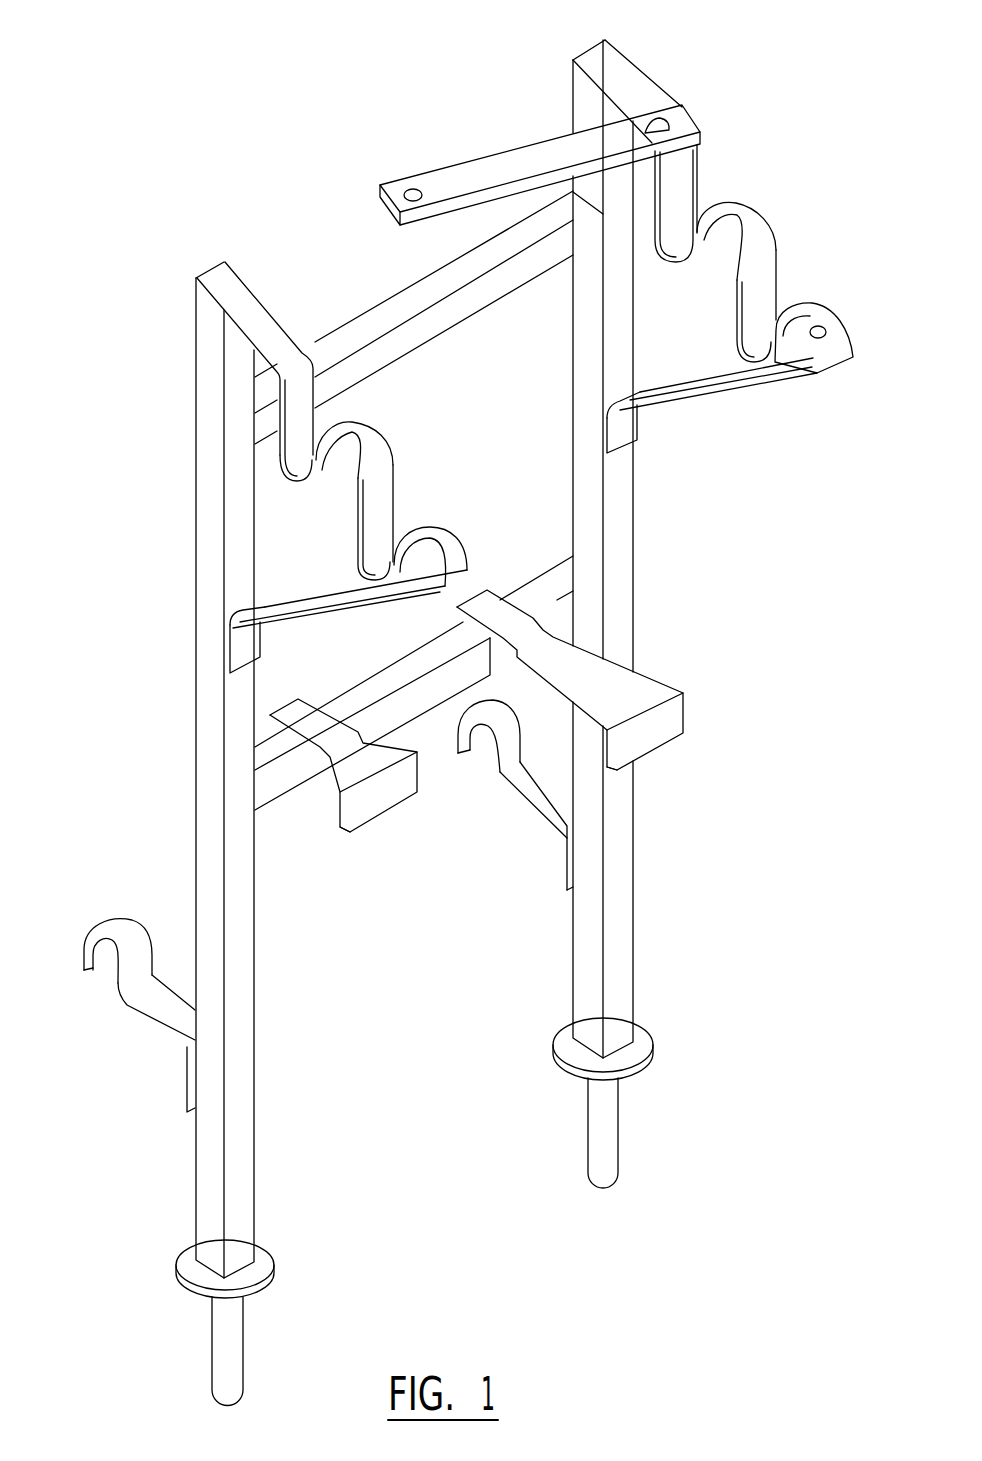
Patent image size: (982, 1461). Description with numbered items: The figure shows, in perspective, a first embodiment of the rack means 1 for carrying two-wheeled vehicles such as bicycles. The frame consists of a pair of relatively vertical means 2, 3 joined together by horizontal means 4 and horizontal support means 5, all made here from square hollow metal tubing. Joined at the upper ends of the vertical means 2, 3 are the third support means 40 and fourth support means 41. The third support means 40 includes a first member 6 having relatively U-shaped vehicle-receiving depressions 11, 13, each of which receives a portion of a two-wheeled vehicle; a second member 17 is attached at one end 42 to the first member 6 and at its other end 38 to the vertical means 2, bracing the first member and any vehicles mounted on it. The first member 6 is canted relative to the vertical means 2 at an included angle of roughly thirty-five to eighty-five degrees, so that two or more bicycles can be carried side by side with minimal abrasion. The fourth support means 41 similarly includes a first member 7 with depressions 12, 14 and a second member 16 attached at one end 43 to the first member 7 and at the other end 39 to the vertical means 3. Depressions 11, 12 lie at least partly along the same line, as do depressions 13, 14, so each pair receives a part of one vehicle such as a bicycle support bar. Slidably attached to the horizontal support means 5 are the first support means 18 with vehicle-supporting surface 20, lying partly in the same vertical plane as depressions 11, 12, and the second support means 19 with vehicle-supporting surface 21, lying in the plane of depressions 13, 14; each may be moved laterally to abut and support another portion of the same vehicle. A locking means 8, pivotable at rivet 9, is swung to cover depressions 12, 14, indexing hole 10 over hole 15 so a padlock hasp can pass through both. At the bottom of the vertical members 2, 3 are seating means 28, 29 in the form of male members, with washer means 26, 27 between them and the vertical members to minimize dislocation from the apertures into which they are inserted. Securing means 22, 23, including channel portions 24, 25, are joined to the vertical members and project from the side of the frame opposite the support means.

The rack means 1 is at (180, 600).
The relatively vertical means 2 is at (212, 773).
The relatively vertical means 3 is at (587, 442).
The horizontal means 4 is at (413, 305).
The horizontal support means 5 is at (388, 683).
The first member 6 is at (362, 452).
The first member 7 is at (735, 232).
The locking means 8 is at (529, 165).
The rivet 9 is at (668, 126).
The hole 10 is at (414, 189).
The vehicle-receiving depression 11 is at (300, 442).
The vehicle-receiving depression 12 is at (680, 197).
The vehicle-receiving depression 13 is at (385, 525).
The vehicle-receiving depression 14 is at (763, 300).
The hole 15 is at (822, 327).
The second member 16 is at (692, 387).
The second member 17 is at (317, 605).
The first support means 18 is at (332, 780).
The second support means 19 is at (610, 688).
The vehicle-supporting surface 20 is at (370, 802).
The vehicle-supporting surface 21 is at (660, 732).
The securing means 22 is at (167, 1007).
The securing means 23 is at (540, 789).
The channel portion 24 is at (103, 957).
The channel portion 25 is at (478, 737).
The washer means 26 is at (260, 1252).
The washer means 27 is at (570, 1038).
The seating means 28 is at (228, 1342).
The seating means 29 is at (602, 1142).
The end 38 is at (255, 662).
The end 39 is at (628, 450).
The third support means 40 is at (263, 302).
The fourth support means 41 is at (628, 57).
The end 42 is at (453, 573).
The end 43 is at (833, 360).